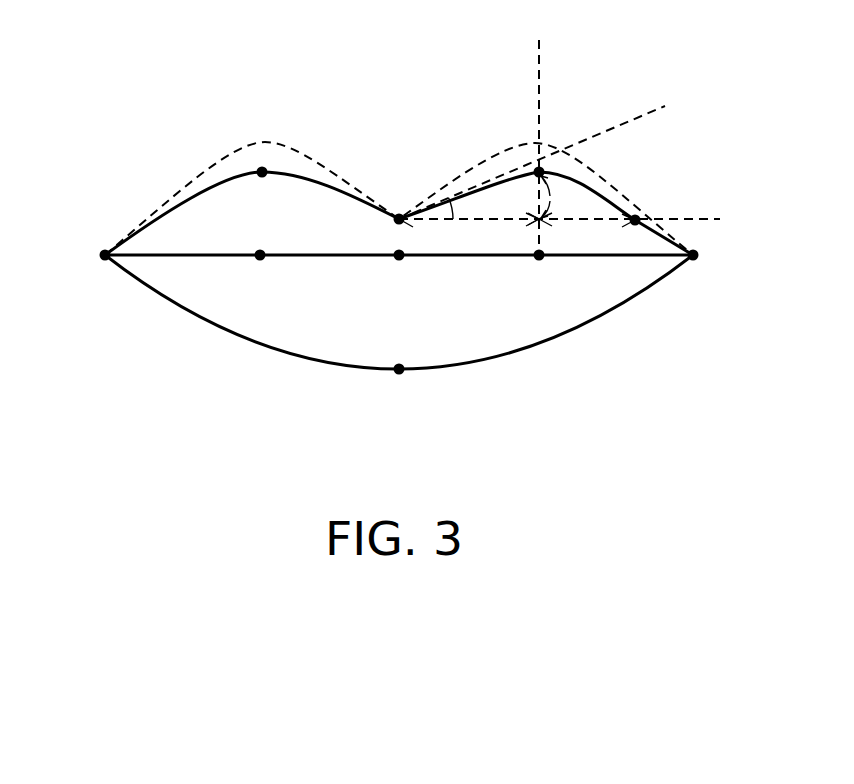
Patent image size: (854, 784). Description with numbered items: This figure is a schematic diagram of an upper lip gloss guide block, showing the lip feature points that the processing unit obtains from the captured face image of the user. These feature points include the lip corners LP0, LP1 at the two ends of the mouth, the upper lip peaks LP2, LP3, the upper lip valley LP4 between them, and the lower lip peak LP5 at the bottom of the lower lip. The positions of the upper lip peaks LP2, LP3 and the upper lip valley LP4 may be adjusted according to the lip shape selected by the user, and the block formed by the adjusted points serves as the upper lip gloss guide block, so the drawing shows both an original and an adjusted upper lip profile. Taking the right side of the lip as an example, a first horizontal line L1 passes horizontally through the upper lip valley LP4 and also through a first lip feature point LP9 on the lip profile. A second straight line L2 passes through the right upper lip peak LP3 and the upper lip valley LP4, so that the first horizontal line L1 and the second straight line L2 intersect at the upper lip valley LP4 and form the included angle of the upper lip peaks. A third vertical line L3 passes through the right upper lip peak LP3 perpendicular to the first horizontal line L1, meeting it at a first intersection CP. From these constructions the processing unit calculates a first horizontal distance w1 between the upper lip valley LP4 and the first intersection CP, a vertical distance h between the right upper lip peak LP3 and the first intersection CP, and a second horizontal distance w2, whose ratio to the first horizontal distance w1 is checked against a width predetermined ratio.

The lip corner LP0 is at (77, 256).
The lip corner LP1 is at (722, 259).
The upper lip peak LP2 is at (259, 194).
The right upper lip peak LP3 is at (536, 176).
The upper lip valley LP4 is at (398, 191).
The lower lip peak LP5 is at (396, 392).
The first lip feature point LP9 is at (661, 204).
The first intersection CP is at (543, 218).
The first horizontal line L1 is at (576, 222).
The second straight line L2 is at (552, 153).
The third vertical line L3 is at (541, 128).
The first horizontal distance w1 is at (469, 236).
The second horizontal distance w2 is at (587, 236).
The vertical distance h is at (554, 198).